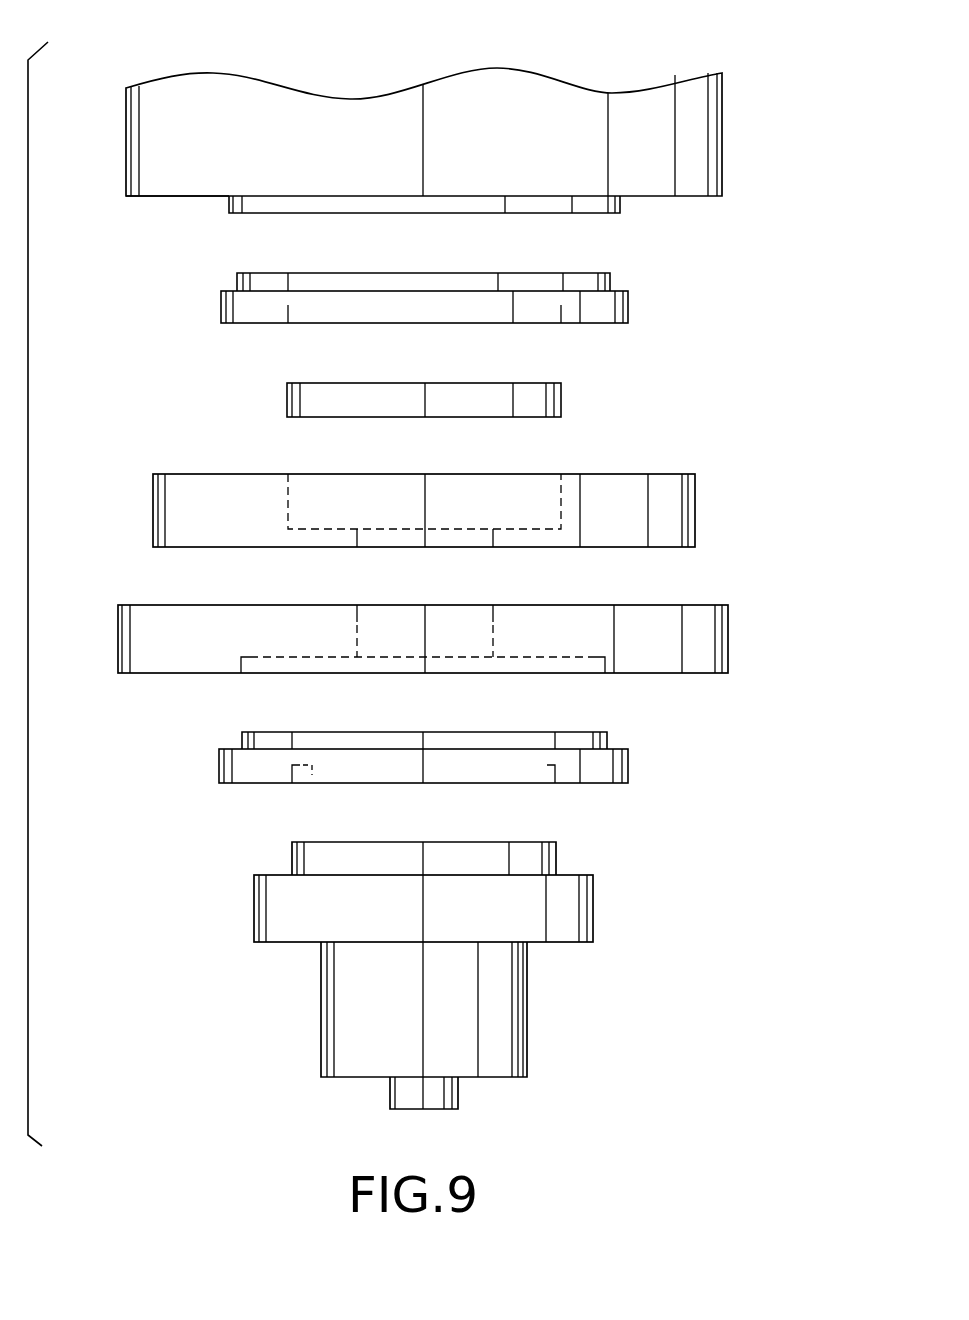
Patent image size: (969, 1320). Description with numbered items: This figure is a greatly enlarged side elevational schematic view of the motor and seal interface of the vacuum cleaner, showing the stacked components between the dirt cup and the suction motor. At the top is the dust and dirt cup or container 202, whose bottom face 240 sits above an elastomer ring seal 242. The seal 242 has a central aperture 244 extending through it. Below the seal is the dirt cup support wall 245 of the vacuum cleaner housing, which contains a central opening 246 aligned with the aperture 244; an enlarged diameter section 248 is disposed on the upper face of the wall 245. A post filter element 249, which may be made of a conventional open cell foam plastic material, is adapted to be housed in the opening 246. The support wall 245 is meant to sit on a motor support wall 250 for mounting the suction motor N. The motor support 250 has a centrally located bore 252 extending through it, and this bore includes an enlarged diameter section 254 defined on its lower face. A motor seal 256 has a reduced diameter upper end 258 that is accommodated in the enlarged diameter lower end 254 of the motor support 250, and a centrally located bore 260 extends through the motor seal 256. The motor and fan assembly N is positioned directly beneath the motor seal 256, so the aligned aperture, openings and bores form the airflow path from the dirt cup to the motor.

The dust and dirt cup or container 202 is at (739, 134).
The bottom face 240 is at (180, 200).
The elastomer ring seal 242 is at (487, 275).
The central aperture 244 is at (290, 305).
The dirt cup support wall 245 is at (487, 510).
The central opening 246 is at (478, 548).
The enlarged diameter section 248 is at (288, 506).
The post filter element 249 is at (585, 391).
The motor support wall 250 is at (469, 655).
The centrally located bore 252 is at (357, 625).
The enlarged diameter section 254 is at (590, 658).
The motor seal 256 is at (430, 769).
The reduced diameter upper end 258 is at (243, 735).
The centrally located bore 260 is at (312, 784).
The suction motor and fan assembly N is at (550, 989).